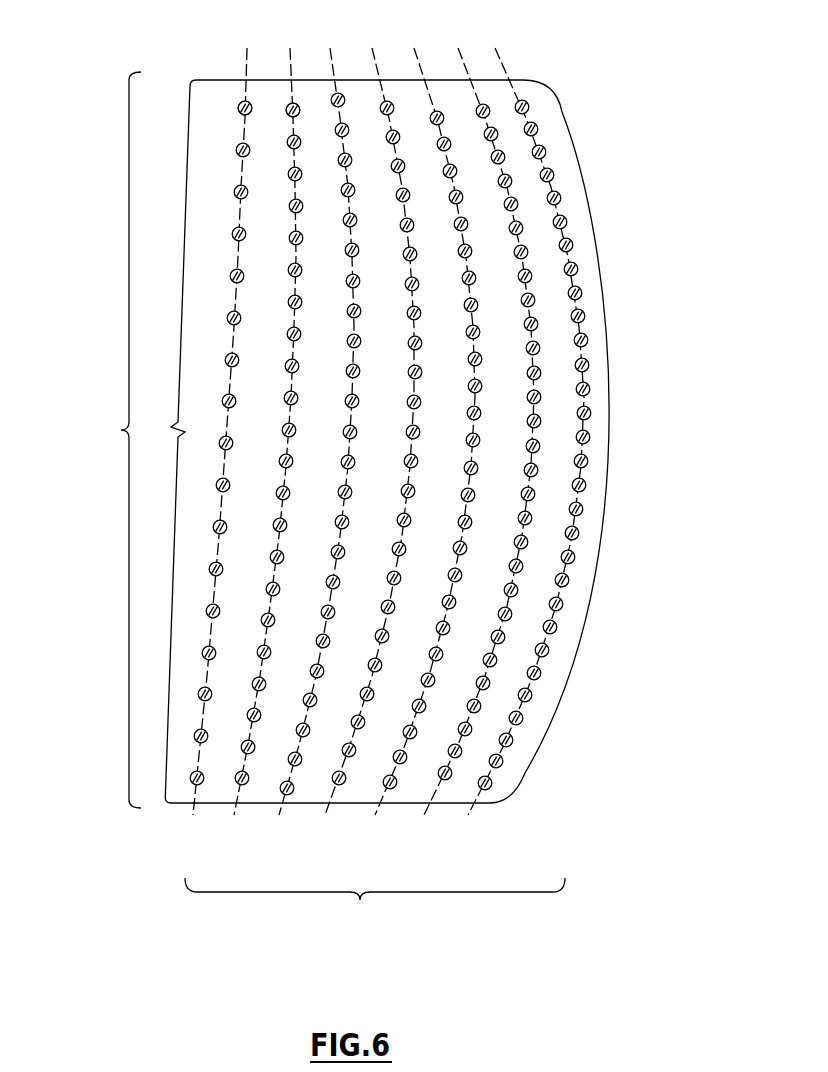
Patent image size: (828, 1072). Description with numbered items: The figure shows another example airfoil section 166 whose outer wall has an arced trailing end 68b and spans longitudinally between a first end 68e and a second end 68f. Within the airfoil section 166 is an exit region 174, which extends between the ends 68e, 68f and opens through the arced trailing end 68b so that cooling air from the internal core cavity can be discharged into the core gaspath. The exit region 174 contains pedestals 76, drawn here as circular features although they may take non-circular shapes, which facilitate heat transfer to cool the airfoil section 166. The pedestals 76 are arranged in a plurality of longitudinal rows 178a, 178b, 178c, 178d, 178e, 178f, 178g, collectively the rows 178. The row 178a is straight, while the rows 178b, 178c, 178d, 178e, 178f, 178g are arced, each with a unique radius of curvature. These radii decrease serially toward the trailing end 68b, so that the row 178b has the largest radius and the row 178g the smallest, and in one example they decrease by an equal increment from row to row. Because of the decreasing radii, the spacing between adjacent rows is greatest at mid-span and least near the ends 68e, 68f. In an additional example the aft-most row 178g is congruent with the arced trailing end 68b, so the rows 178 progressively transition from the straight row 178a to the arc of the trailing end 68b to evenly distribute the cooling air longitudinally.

The airfoil section 166 is at (598, 156).
The arced trailing end 68b is at (593, 226).
The first end 68e is at (166, 810).
The second end 68f is at (216, 95).
The pedestals 76 is at (250, 100).
The exit region 174 is at (120, 430).
The rows 178 is at (359, 905).
The row 178a is at (194, 812).
The row 178b is at (248, 813).
The row 178c is at (281, 812).
The row 178d is at (324, 812).
The row 178e is at (372, 813).
The row 178f is at (426, 815).
The row 178g is at (466, 814).